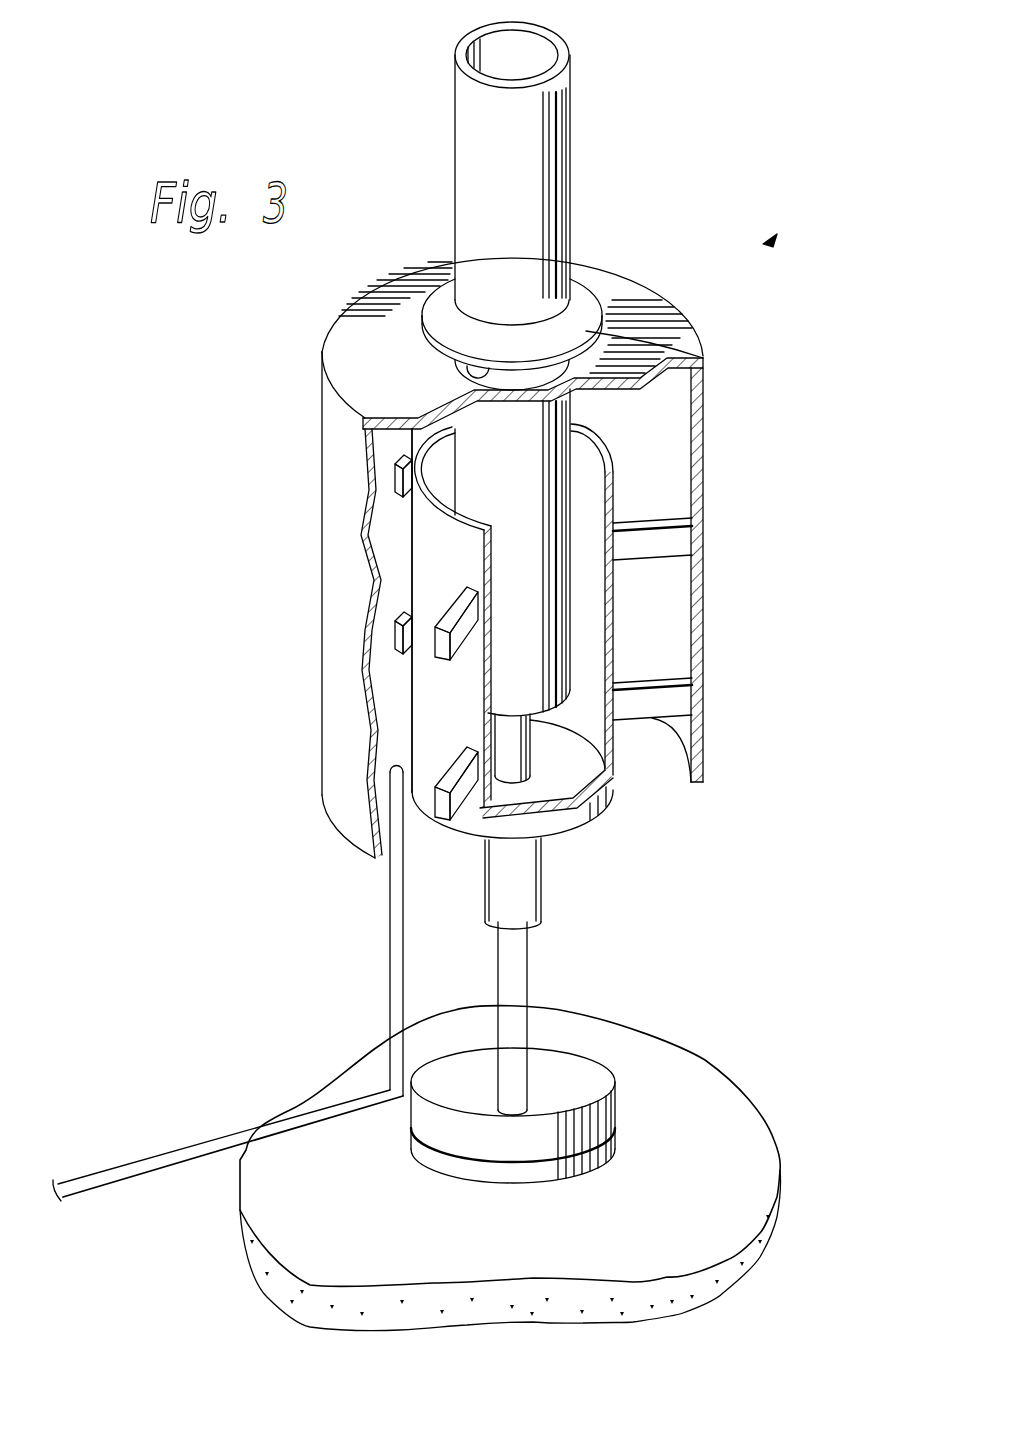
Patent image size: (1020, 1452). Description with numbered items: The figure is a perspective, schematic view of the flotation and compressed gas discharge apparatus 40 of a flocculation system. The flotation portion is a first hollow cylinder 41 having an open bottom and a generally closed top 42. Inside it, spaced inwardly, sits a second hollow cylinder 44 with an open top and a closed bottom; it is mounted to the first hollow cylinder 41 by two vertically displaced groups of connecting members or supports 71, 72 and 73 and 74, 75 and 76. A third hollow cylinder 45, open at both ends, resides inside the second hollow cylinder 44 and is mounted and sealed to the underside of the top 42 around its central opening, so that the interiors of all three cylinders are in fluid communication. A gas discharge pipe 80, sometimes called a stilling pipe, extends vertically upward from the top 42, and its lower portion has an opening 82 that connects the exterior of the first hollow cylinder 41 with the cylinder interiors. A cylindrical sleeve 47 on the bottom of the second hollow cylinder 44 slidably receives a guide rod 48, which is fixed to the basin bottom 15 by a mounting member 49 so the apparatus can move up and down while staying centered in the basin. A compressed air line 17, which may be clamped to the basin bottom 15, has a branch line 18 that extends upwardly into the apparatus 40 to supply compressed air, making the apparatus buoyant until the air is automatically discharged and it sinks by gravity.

The basin bottom 15 is at (716, 1058).
The compressed air line 17 is at (188, 1141).
The branch line 18 is at (389, 931).
The flotation and compressed gas discharge apparatus 40 is at (770, 239).
The first hollow cylinder 41 is at (322, 541).
The top of first hollow cylinder 42 is at (343, 339).
The second hollow cylinder 44 is at (406, 681).
The third hollow cylinder 45 is at (571, 409).
The cylindrical sleeve 47 is at (543, 868).
The guide rod 48 is at (528, 975).
The mounting member 49 is at (616, 1108).
The connecting member 71 is at (666, 521).
The connecting member 72 is at (458, 607).
The connecting member 73 is at (400, 471).
The connecting member 74 is at (666, 681).
The connecting member 75 is at (458, 765).
The connecting member 76 is at (400, 630).
The gas discharge pipe 80 is at (571, 111).
The opening 82 is at (465, 375).